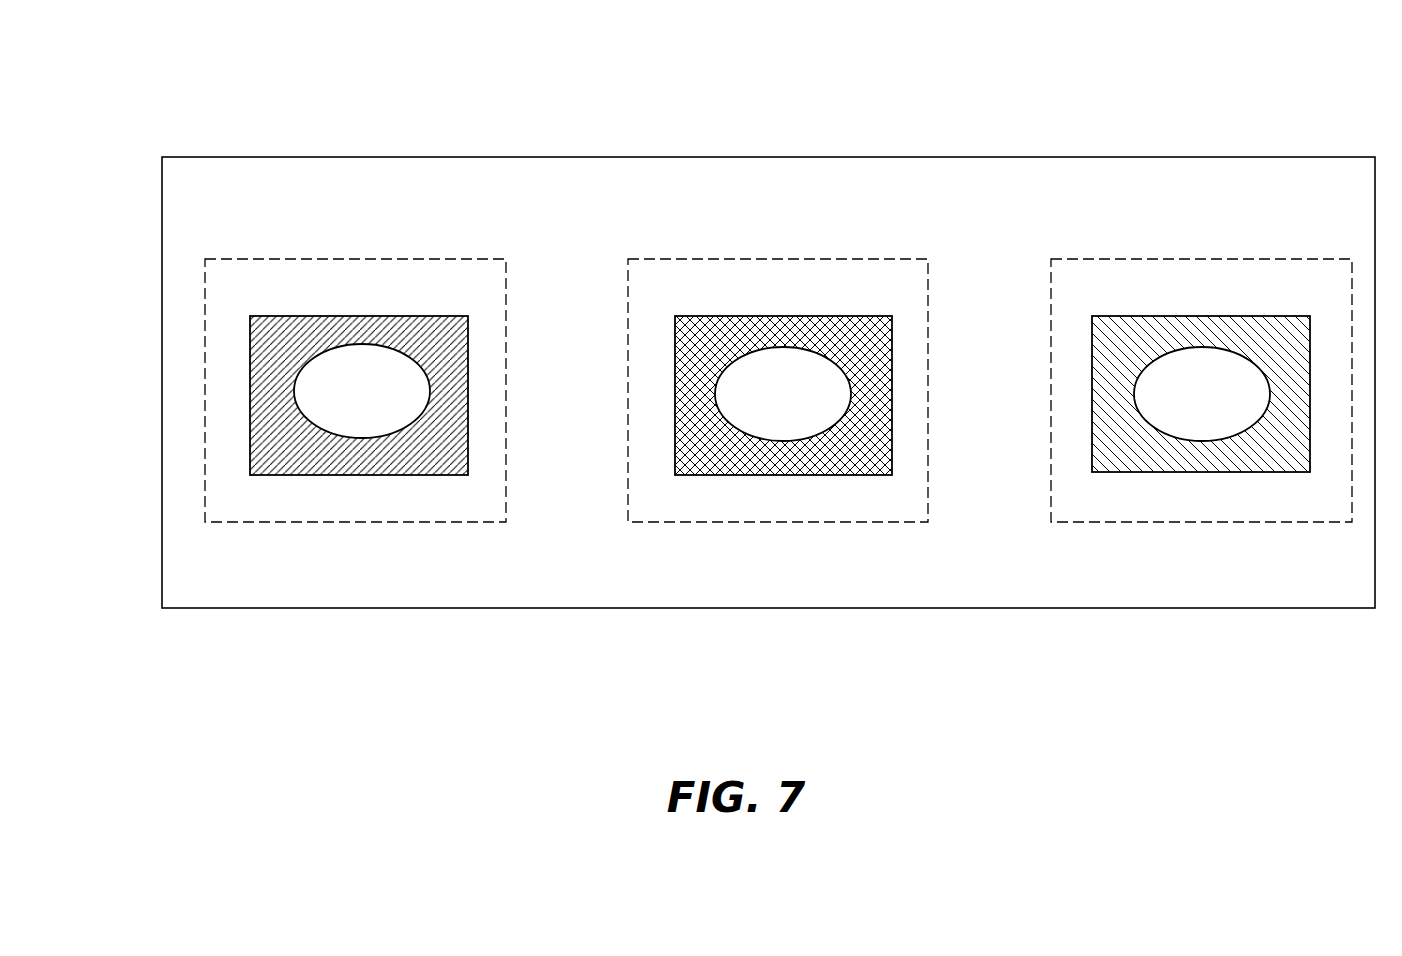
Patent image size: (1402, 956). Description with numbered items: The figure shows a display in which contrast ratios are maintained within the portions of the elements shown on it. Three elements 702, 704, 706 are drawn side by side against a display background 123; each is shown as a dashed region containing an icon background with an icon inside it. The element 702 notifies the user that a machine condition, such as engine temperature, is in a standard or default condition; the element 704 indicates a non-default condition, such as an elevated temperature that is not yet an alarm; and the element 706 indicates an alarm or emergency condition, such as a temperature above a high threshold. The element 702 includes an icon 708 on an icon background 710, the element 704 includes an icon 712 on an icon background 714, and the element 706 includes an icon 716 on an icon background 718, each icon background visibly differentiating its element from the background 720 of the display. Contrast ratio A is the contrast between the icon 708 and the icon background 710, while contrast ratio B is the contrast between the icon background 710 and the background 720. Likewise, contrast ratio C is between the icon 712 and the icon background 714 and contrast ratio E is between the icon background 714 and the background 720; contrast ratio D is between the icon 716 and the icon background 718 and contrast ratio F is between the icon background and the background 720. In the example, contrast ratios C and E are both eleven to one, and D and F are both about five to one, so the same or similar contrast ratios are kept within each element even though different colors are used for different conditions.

The display background 123 is at (200, 100).
The element 702 is at (490, 258).
The element 704 is at (883, 258).
The element 706 is at (1315, 258).
The icon 708 is at (339, 404).
The icon background 710 is at (338, 313).
The icon 712 is at (760, 407).
The icon background 714 is at (743, 315).
The icon 716 is at (1179, 407).
The icon background 718 is at (1175, 315).
The background 720 is at (575, 572).
The contrast ratio A is at (351, 447).
The contrast ratio B is at (428, 470).
The contrast ratio C is at (767, 448).
The contrast ratio D is at (1179, 447).
The contrast ratio E is at (856, 466).
The contrast ratio F is at (1273, 464).